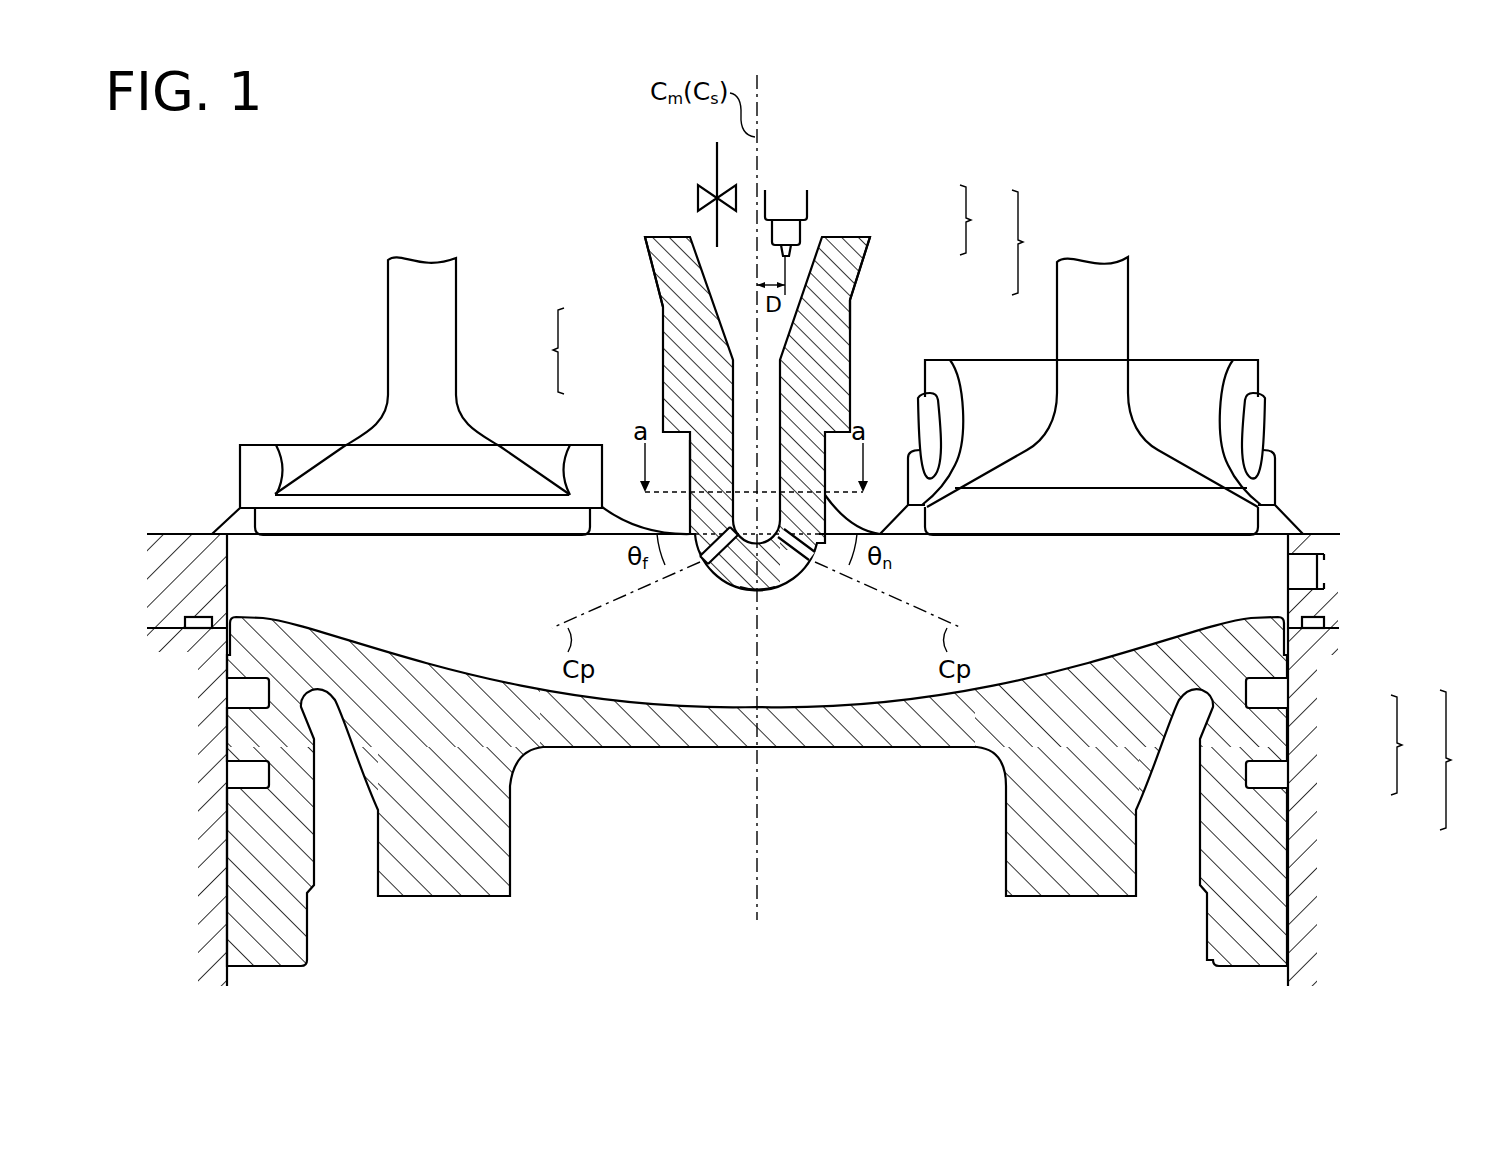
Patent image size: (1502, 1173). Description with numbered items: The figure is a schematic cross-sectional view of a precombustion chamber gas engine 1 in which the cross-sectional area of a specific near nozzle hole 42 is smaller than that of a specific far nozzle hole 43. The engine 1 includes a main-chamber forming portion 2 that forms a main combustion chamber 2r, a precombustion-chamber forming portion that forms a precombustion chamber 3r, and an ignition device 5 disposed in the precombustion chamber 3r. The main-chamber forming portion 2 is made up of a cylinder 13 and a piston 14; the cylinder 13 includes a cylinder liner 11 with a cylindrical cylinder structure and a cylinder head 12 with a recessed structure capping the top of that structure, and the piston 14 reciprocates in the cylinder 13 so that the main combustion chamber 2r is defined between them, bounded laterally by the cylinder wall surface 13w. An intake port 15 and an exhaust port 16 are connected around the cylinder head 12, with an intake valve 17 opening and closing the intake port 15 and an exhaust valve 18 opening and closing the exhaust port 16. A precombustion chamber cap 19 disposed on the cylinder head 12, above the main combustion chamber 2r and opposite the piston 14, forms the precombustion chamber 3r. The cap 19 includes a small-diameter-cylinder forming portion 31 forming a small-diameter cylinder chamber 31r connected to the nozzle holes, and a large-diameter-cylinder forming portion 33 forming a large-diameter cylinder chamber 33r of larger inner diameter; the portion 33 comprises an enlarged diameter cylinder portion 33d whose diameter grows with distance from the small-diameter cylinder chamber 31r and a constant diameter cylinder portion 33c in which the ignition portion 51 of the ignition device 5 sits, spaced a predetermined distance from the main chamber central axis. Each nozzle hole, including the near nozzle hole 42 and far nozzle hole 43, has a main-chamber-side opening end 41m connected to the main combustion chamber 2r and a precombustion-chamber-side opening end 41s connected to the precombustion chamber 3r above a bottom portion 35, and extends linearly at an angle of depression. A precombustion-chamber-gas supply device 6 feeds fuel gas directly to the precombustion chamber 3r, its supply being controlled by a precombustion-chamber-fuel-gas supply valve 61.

The precombustion chamber gas engine 1 is at (160, 314).
The main-chamber forming portion 2 is at (1455, 760).
The main combustion chamber 2r is at (743, 542).
The precombustion chamber 3r is at (541, 351).
The ignition device 5 is at (807, 200).
The precombustion-chamber-gas supply device 6 is at (717, 165).
The cylinder liner 11 is at (1317, 722).
The cylinder head 12 is at (1328, 610).
The cylinder 13 is at (1415, 745).
The cylinder wall surface 13w is at (236, 578).
The piston 14 is at (1280, 819).
The intake port 15 is at (1243, 378).
The exhaust port 16 is at (270, 460).
The intake valve 17 is at (1110, 338).
The exhaust valve 18 is at (390, 417).
The precombustion chamber cap 19 is at (1052, 242).
The small-diameter-cylinder forming portion 31 is at (784, 375).
The small-diameter cylinder chamber 31r is at (745, 472).
The large-diameter-cylinder forming portion 33 is at (986, 220).
The constant diameter cylinder portion 33c is at (870, 237).
The enlarged diameter cylinder portion 33d is at (855, 285).
The large-diameter cylinder chamber 33r is at (717, 263).
The bottom portion 35 is at (773, 553).
The main-chamber-side opening end 41m is at (697, 562).
The precombustion-chamber-side opening end 41s is at (733, 530).
The specific near nozzle hole 42 is at (800, 555).
The specific far nozzle hole 43 is at (713, 555).
The ignition portion 51 is at (773, 265).
The precombustion-chamber-fuel-gas supply valve 61 is at (698, 200).